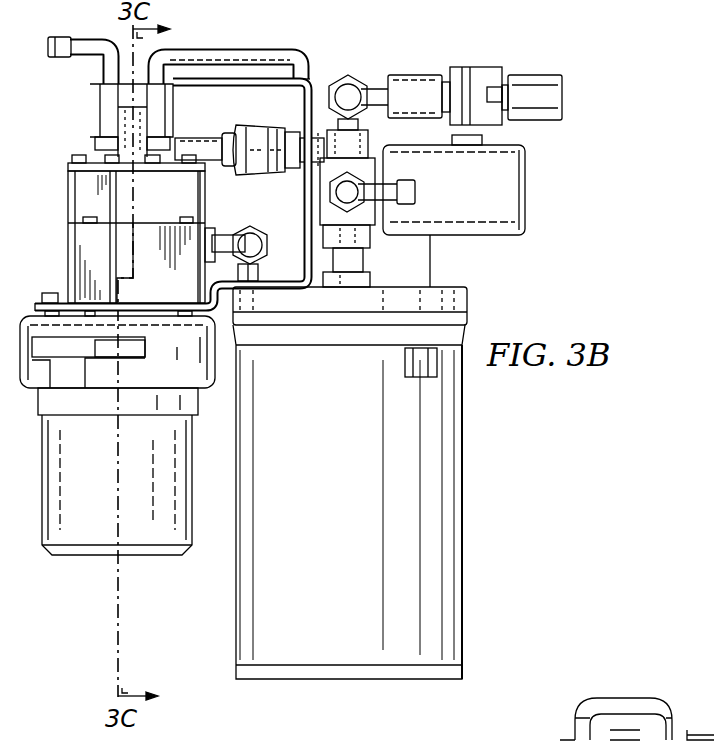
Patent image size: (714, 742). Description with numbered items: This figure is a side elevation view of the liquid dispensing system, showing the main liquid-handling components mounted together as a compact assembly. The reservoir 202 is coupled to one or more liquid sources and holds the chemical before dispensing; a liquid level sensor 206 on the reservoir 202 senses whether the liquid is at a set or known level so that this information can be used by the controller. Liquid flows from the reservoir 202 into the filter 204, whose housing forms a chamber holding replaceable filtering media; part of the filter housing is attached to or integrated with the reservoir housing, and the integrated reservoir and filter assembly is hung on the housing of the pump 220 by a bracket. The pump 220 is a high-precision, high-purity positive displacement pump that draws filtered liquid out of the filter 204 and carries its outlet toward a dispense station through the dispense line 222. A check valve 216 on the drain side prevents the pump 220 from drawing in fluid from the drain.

The reservoir 202 is at (95, 247).
The filter 204 is at (87, 535).
The liquid level sensor 206 is at (125, 122).
The check valve 216 is at (535, 72).
The pump 220 is at (447, 512).
The dispense line 222 is at (376, 173).